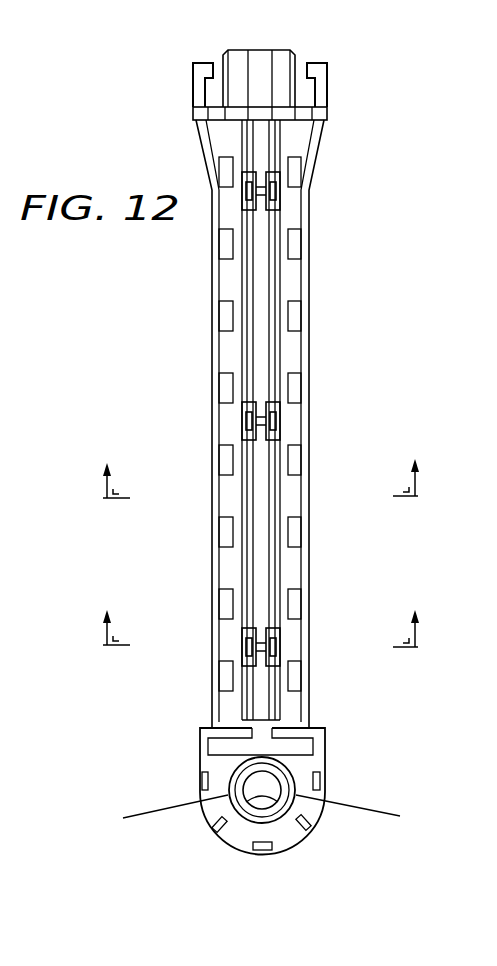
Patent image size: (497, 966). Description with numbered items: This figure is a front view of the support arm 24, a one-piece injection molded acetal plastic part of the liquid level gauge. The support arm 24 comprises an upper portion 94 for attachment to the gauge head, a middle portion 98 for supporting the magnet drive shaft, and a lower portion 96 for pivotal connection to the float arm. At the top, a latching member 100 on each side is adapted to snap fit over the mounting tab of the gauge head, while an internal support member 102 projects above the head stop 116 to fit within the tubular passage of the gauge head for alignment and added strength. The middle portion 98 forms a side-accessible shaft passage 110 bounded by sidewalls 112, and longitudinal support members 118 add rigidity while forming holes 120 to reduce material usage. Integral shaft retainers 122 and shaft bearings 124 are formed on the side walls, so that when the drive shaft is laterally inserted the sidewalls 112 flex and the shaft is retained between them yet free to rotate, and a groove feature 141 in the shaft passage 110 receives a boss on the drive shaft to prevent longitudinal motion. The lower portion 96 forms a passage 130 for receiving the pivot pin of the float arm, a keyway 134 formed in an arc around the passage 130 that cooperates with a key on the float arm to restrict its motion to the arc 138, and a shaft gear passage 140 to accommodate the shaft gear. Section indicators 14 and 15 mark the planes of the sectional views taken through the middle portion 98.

The support arm 24 is at (316, 40).
The upper portion 94 is at (95, 67).
The lower portion 96 is at (112, 765).
The middle portion 98 is at (138, 286).
The latching member 100 is at (193, 82).
The internal support member 102 is at (240, 50).
The side-accessible shaft passage 110 is at (265, 283).
The sidewalls 112 is at (226, 572).
The head stop 116 is at (305, 109).
The longitudinal support members 118 is at (215, 352).
The holes 120 is at (226, 462).
The shaft retainers 122 is at (276, 192).
The shaft bearings 124 is at (259, 198).
The passage 130 is at (250, 807).
The keyway 134 is at (202, 780).
The arc 138 is at (383, 817).
The shaft gear passage 140 is at (313, 746).
The groove feature 141 is at (263, 720).
The section line 14 is at (258, 615).
The section line 15 is at (258, 465).